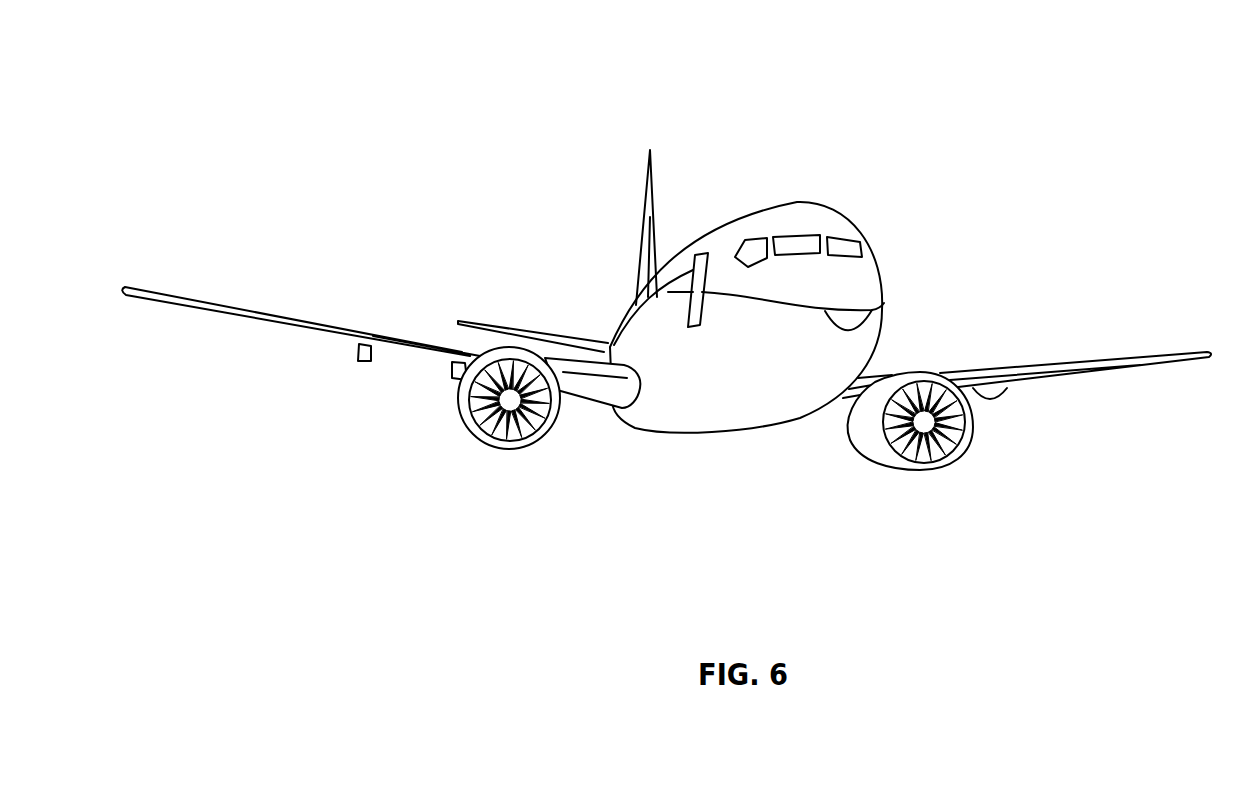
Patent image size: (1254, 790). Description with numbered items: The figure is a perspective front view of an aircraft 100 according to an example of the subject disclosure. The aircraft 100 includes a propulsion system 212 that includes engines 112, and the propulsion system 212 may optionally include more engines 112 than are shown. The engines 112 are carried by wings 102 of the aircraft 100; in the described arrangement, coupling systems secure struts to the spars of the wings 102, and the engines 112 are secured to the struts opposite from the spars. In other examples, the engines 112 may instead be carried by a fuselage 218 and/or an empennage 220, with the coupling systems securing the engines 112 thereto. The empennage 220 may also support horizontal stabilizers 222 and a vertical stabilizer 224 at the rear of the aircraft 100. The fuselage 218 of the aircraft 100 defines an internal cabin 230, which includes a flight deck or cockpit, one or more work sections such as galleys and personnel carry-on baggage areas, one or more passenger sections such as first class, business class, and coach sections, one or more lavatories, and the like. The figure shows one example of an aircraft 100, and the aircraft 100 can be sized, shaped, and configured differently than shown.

The aircraft 100 is at (666, 299).
The wings 102 is at (270, 313).
The engines 112 is at (502, 445).
The propulsion system 212 is at (370, 425).
The fuselage 218 is at (880, 272).
The empennage 220 is at (637, 303).
The horizontal stabilizers 222 is at (498, 327).
The vertical stabilizer 224 is at (647, 193).
The internal cabin 230 is at (800, 245).